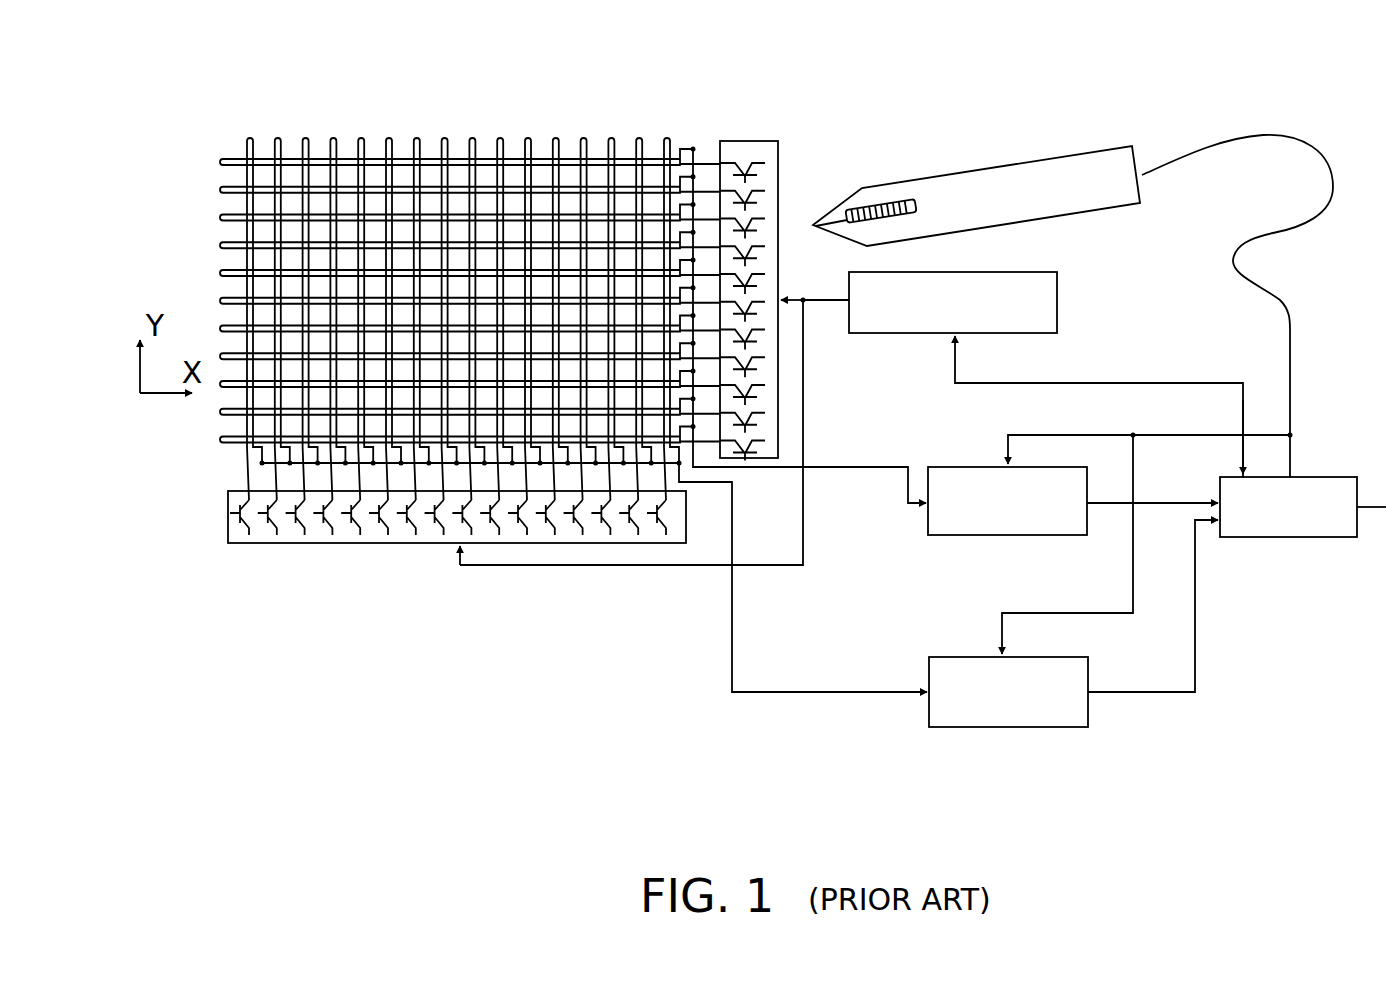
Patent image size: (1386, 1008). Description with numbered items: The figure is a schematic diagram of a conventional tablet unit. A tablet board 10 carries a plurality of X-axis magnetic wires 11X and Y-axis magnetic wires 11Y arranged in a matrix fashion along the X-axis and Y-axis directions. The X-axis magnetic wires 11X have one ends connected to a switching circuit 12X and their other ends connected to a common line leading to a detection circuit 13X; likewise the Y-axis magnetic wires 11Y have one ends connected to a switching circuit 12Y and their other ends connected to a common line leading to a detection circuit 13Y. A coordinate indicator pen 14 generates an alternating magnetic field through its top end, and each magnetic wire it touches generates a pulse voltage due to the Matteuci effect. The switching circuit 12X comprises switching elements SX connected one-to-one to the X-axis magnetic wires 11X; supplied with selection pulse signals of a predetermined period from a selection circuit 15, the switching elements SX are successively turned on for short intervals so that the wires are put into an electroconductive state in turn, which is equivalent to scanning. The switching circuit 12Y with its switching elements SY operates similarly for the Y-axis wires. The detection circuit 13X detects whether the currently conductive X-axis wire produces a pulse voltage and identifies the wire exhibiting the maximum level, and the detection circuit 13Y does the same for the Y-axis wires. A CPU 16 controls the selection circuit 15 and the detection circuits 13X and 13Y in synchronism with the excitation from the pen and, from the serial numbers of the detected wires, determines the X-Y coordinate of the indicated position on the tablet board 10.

The tablet board 10 is at (422, 264).
The X-axis magnetic wires 11X is at (640, 137).
The Y-axis magnetic wires 11Y is at (221, 192).
The switching circuit 12X is at (438, 556).
The switching circuit 12Y is at (786, 268).
The switching elements SX is at (406, 545).
The switching elements SY is at (758, 183).
The detection circuit 13X is at (1000, 727).
The detection circuit 13Y is at (990, 535).
The coordinate indicator pen 14 is at (1020, 163).
The selection circuit 15 is at (1057, 302).
The CPU 16 is at (1331, 477).